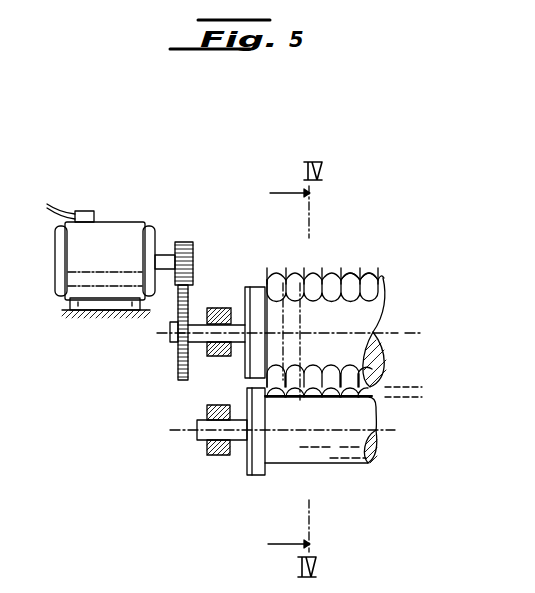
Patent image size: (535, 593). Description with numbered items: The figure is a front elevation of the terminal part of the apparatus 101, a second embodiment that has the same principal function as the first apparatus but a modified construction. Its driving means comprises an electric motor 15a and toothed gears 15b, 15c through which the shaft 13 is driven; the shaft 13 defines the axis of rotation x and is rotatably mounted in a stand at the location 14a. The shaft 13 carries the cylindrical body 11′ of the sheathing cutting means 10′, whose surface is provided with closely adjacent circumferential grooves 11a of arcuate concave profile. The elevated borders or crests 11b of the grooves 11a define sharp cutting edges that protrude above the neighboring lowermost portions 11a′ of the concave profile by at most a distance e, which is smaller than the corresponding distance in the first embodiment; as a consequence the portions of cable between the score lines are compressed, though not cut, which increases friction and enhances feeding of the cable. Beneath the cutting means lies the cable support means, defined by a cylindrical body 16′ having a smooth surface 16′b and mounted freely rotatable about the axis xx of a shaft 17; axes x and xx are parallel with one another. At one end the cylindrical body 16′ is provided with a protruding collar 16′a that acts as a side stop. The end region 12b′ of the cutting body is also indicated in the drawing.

The apparatus 101 is at (206, 153).
The electric motor 15a is at (114, 235).
The toothed gear 15b is at (184, 242).
The toothed gear 15c is at (176, 357).
The shaft 13 is at (203, 306).
The mounting location 14a is at (222, 306).
The cylindrical body 11′ is at (252, 287).
The circumferential grooves 11a is at (374, 287).
The crests 11b is at (305, 272).
The lowermost portions 11a′ is at (356, 280).
The roller end cap 12b′ is at (366, 311).
The sheathing cutting means 10′ is at (432, 337).
The axis of rotation x is at (404, 336).
The axis xx is at (181, 432).
The distance e is at (417, 374).
The cylindrical body 16′ is at (376, 452).
The smooth surface 16′b is at (340, 466).
The protruding collar 16′a is at (258, 477).
The shaft 17 is at (241, 440).